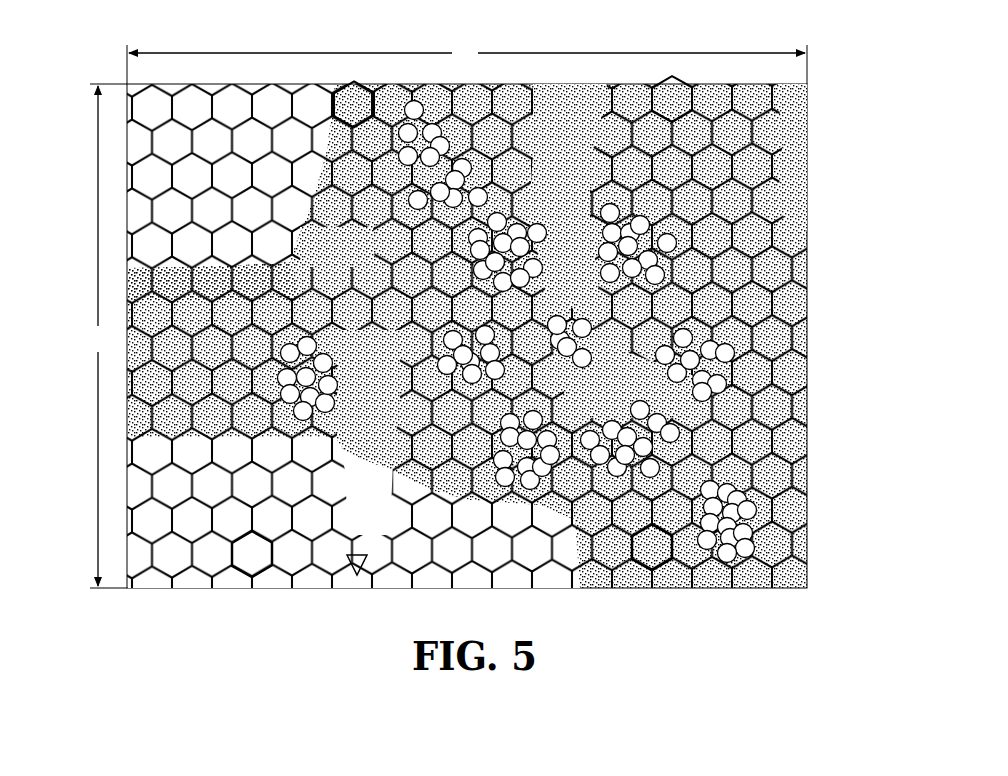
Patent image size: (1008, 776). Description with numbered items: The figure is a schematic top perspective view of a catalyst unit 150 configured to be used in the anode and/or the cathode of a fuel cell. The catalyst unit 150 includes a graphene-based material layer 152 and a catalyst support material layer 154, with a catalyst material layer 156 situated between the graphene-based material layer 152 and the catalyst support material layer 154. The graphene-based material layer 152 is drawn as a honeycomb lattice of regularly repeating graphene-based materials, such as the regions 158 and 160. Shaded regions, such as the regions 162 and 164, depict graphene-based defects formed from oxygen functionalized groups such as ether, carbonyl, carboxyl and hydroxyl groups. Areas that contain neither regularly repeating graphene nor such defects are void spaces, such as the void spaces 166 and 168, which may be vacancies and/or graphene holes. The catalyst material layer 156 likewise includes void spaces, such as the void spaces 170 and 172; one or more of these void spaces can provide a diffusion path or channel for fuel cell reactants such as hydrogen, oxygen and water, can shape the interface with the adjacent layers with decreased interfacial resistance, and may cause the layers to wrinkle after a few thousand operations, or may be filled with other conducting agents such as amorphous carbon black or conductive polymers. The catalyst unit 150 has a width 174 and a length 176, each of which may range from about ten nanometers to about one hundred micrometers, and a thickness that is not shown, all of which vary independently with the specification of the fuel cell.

The catalyst unit 150 is at (62, 561).
The graphene-based material layer 152 is at (176, 92).
The catalyst support material layer 154 is at (563, 110).
The catalyst material layer 156 is at (424, 115).
The region of regularly repeating graphene-based material 158 is at (147, 263).
The region of regularly repeating graphene-based material 160 is at (245, 577).
The shaded region of graphene-based defects 162 is at (357, 562).
The shaded region of graphene-based defects 164 is at (735, 572).
The void space 166 is at (383, 527).
The void space 168 is at (348, 100).
The void space 170 is at (657, 100).
The void space 172 is at (655, 568).
The width 174 is at (523, 53).
The length 176 is at (98, 418).